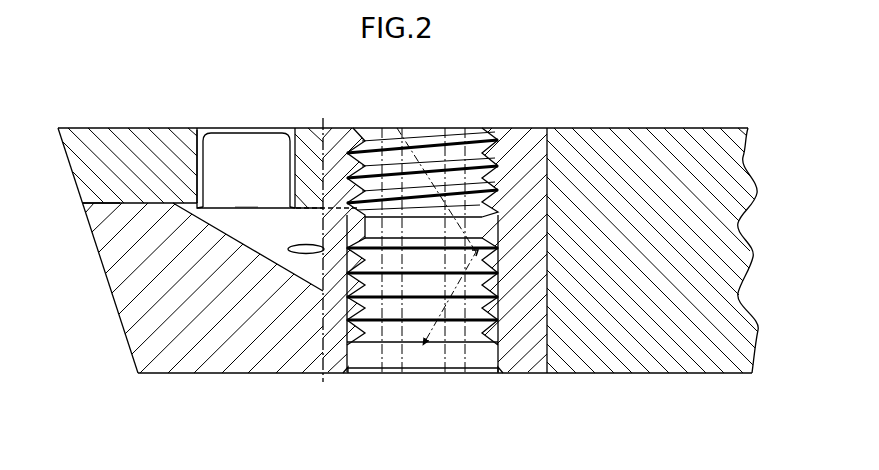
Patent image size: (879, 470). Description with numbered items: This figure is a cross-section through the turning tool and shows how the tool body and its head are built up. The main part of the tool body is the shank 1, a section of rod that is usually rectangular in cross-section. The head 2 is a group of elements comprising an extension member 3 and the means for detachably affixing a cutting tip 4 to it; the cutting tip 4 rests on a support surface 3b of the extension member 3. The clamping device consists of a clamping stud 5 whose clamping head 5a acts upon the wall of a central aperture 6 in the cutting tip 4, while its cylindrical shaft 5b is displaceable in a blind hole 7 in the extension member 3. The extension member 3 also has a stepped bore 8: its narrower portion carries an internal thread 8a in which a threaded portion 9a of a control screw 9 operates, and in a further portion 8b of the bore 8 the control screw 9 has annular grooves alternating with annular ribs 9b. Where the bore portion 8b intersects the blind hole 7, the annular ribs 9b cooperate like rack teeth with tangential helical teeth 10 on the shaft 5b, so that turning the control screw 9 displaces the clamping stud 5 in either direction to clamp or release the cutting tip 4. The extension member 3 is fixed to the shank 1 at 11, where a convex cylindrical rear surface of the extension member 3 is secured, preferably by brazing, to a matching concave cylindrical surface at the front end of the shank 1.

The shank 1 is at (662, 158).
The head 2 is at (107, 282).
The extension member 3 is at (195, 348).
The support surface 3b is at (102, 207).
The cutting tip 4 is at (130, 140).
The clamping stud 5 is at (246, 154).
The clamping head 5a is at (222, 147).
The cylindrical shaft 5b is at (253, 220).
The central aperture 6 is at (197, 133).
The blind hole 7 is at (278, 266).
The stepped bore 8 is at (421, 252).
The internal thread 8a is at (498, 152).
The further portion of the bore 8b is at (485, 306).
The control screw 9 is at (422, 252).
The threaded portion 9a is at (424, 185).
The annular ribs 9b is at (419, 322).
The tangential helical teeth 10 is at (310, 255).
The fixing location 11 is at (549, 157).